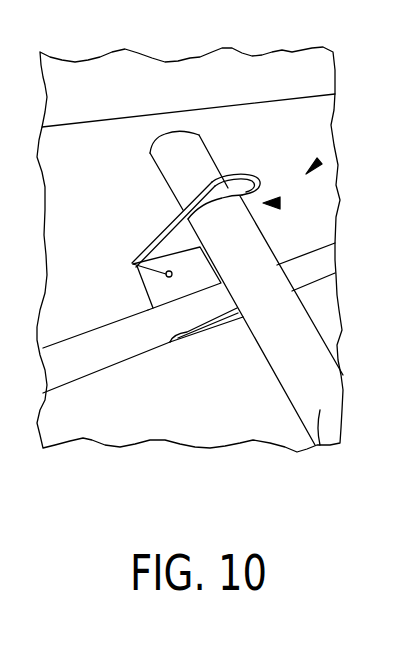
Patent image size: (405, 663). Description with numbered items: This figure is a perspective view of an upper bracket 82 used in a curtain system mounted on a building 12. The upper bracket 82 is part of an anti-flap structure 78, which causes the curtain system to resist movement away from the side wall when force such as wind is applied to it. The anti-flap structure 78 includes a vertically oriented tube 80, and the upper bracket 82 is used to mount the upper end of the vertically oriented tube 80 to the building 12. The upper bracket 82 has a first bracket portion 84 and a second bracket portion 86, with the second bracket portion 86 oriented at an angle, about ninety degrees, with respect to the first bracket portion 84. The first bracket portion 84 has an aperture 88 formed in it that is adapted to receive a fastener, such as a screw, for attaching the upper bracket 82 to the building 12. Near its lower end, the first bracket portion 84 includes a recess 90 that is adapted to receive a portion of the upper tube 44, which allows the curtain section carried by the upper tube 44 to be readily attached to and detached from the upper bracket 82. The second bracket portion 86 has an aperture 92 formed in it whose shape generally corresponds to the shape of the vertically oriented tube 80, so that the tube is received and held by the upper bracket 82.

The building 12 is at (152, 420).
The upper tube 44 is at (90, 360).
The anti-flap structure 78 is at (342, 139).
The vertically oriented tube 80 is at (320, 443).
The upper bracket 82 is at (321, 199).
The first bracket portion 84 is at (153, 292).
The second bracket portion 86 is at (168, 243).
The aperture 88 is at (131, 264).
The recess 90 is at (218, 328).
The aperture 92 is at (223, 182).